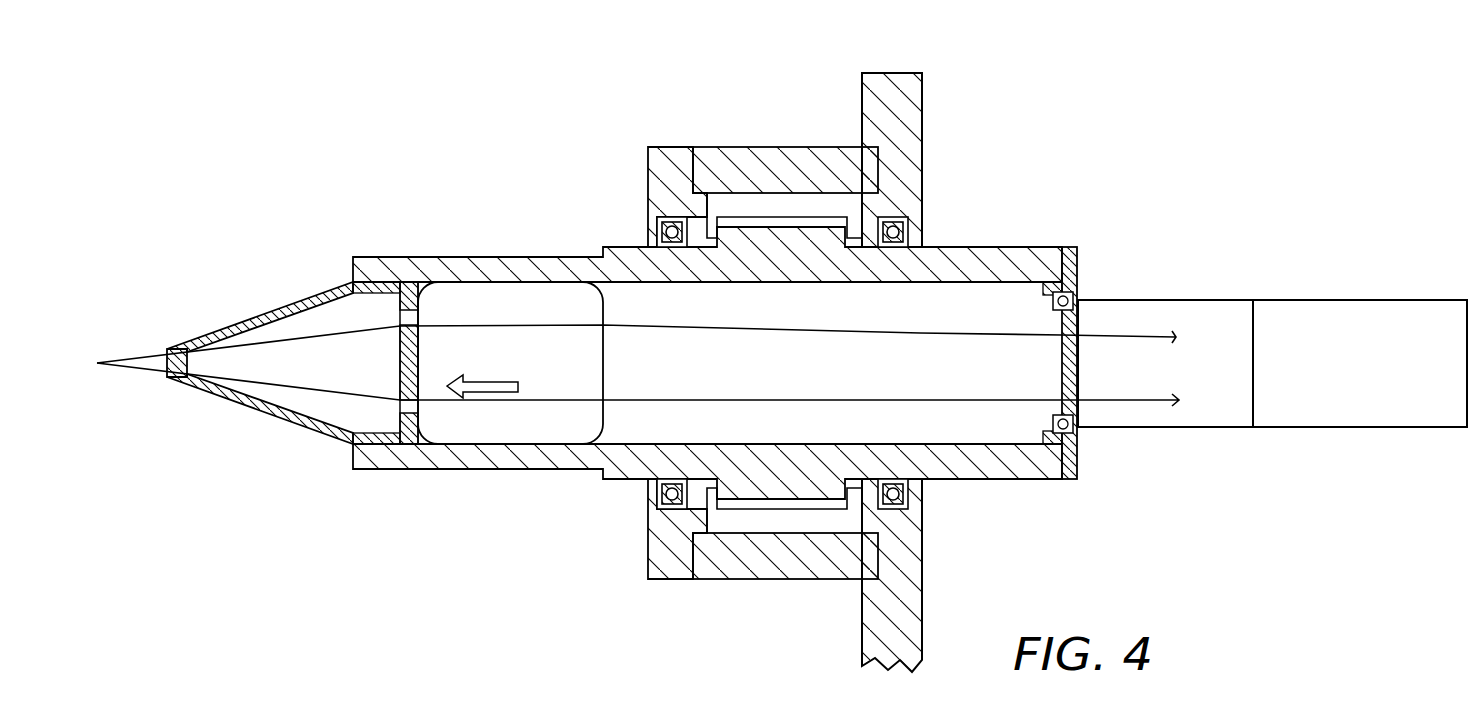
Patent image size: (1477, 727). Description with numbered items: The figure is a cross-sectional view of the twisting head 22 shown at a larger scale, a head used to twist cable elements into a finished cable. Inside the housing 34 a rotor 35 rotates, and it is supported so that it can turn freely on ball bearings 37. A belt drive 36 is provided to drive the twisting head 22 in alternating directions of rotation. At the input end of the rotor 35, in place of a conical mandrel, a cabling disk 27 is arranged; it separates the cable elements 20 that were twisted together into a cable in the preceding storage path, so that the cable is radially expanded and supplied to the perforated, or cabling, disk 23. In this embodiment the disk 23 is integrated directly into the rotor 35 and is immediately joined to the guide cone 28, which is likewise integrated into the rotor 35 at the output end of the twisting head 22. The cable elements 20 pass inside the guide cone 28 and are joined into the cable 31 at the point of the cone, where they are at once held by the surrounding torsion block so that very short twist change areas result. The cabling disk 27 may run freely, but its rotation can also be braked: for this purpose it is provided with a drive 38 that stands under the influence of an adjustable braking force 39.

The cable elements 20 is at (985, 330).
The twisting head 22 is at (664, 142).
The perforated disk 23 is at (413, 282).
The cabling disk 27 is at (1058, 365).
The guide cone 28 is at (270, 315).
The cable 31 is at (107, 360).
The housing 34 is at (768, 147).
The rotor 35 is at (565, 277).
The belt drive 36 is at (806, 222).
The ball bearings 37 is at (1078, 433).
The drive 38 is at (1175, 298).
The adjustable braking force 39 is at (1333, 298).